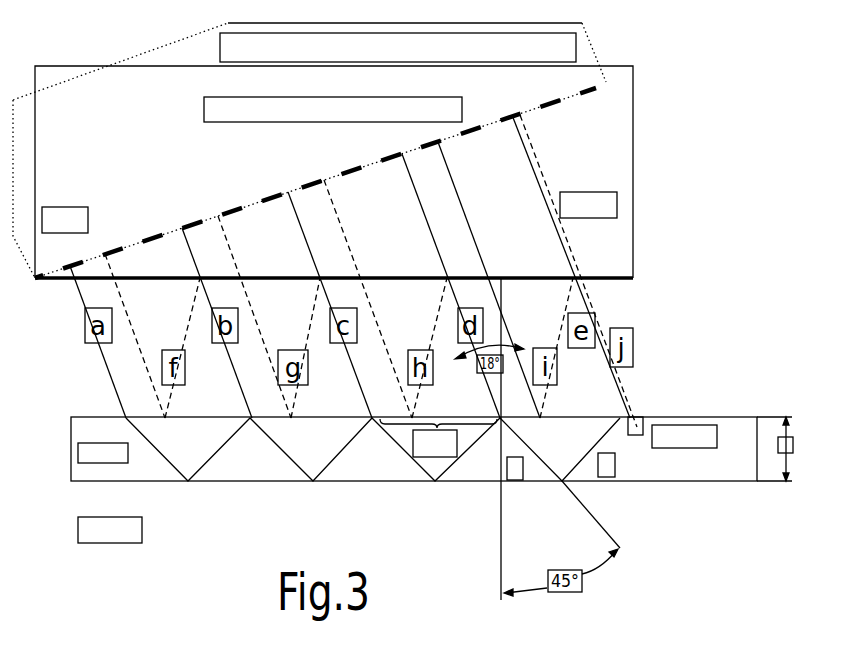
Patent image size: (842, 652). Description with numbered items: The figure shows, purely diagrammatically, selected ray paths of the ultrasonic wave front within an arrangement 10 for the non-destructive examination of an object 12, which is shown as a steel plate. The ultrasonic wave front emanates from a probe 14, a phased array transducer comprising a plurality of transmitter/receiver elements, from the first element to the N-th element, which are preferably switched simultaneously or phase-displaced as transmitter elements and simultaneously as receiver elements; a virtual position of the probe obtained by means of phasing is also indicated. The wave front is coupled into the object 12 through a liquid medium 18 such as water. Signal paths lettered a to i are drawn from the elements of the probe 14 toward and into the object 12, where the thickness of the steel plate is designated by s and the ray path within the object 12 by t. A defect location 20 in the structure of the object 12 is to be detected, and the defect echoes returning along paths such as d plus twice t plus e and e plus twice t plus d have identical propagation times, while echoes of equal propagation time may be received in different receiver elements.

The arrangement 10 is at (711, 133).
The object 12 is at (713, 467).
The probe 14 is at (396, 242).
The liquid medium 18 is at (218, 548).
The defect location 20 is at (640, 418).